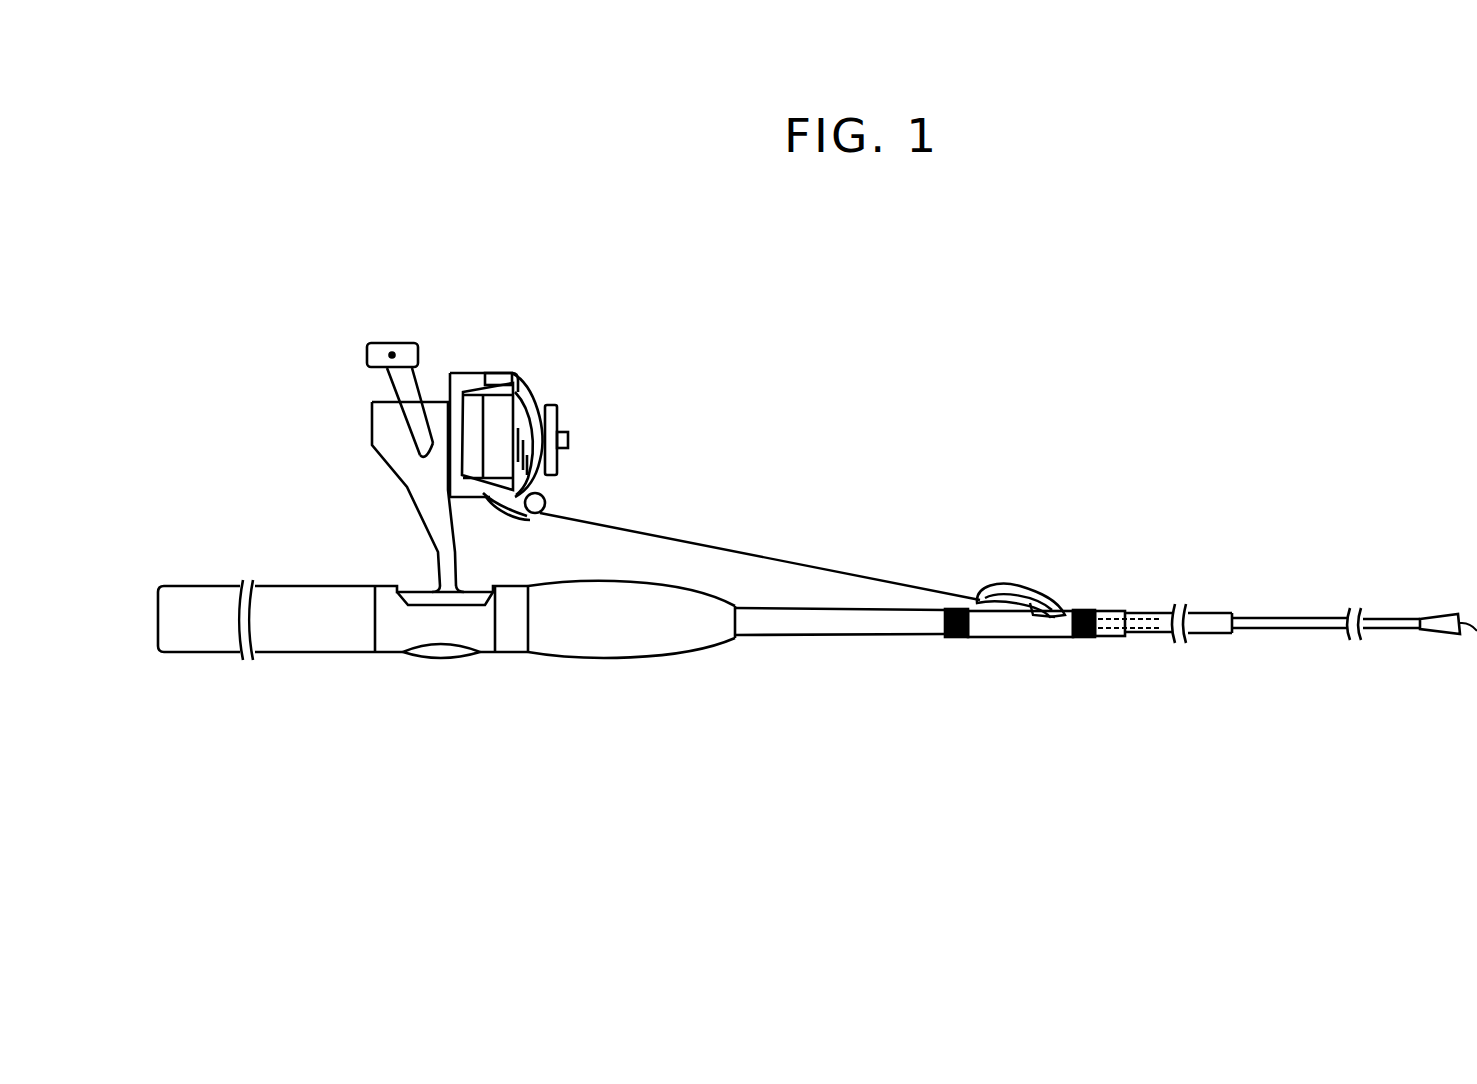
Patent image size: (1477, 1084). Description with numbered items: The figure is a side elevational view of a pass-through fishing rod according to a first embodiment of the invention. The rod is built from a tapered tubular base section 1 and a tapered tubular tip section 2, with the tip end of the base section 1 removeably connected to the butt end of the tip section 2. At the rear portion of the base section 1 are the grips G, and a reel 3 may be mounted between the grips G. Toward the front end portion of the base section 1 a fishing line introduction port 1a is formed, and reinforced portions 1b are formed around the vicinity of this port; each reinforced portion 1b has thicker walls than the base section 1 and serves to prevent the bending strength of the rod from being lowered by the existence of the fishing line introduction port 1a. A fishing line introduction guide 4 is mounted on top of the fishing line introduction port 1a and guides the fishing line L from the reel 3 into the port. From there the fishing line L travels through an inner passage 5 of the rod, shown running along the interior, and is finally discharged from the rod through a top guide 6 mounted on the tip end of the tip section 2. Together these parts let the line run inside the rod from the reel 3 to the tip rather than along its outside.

The base section 1 is at (840, 636).
The fishing line introduction port 1a is at (1067, 607).
The reinforced portion 1b is at (1024, 638).
The tip section 2 is at (1288, 617).
The reel 3 is at (477, 372).
The fishing line introduction guide 4 is at (1033, 578).
The inner passage 5 is at (1143, 638).
The top guide 6 is at (1437, 615).
The grip G is at (362, 653).
The fishing line L is at (870, 573).